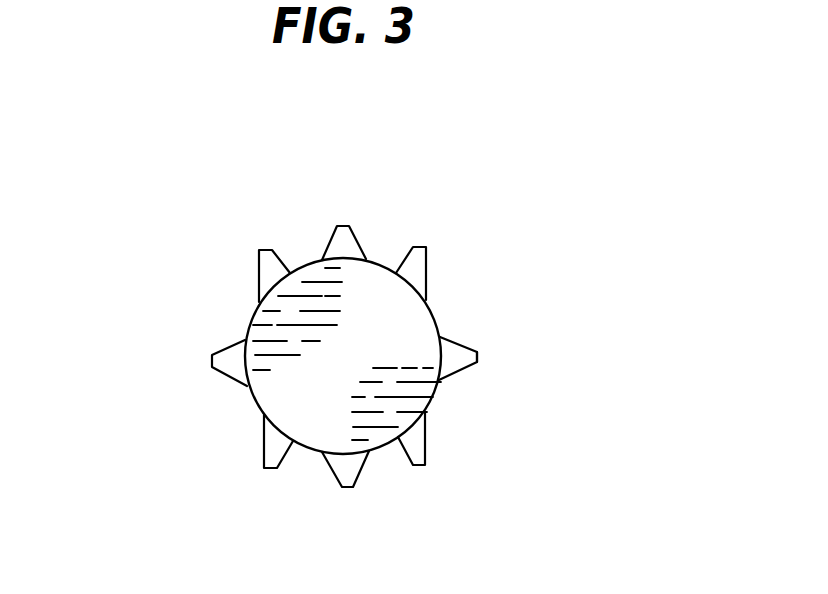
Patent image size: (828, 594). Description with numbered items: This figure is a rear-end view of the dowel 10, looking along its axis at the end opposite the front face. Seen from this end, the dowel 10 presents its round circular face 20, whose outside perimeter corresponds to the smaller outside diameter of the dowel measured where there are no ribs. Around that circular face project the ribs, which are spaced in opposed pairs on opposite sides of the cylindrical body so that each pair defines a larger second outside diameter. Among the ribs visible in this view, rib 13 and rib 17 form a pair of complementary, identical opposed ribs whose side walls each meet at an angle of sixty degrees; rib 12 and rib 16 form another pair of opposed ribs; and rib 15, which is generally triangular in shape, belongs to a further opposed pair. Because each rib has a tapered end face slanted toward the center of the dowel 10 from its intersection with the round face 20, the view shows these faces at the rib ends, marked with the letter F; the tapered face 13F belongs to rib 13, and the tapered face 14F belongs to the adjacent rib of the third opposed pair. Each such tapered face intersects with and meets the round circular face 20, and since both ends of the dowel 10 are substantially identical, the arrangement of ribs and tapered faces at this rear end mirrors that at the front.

The dowel 10 is at (348, 228).
The rib 12 is at (427, 264).
The rib 13 is at (462, 370).
The tapered face of rib 13 13F is at (462, 358).
The tapered face of rib 14 14F is at (415, 446).
The rib 15 is at (360, 475).
The rib 16 is at (262, 443).
The rib 17 is at (227, 342).
The round circular face 20 is at (357, 368).